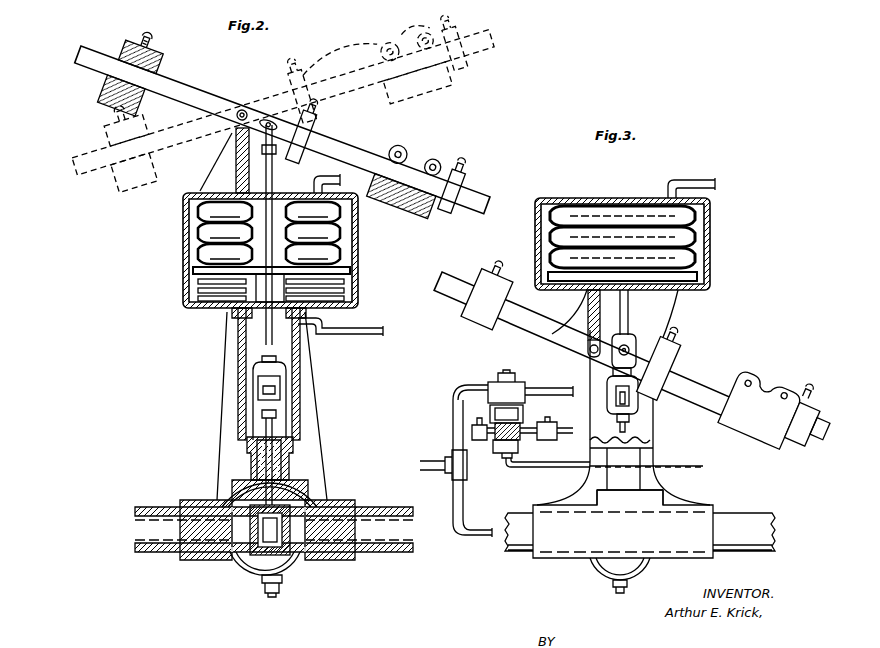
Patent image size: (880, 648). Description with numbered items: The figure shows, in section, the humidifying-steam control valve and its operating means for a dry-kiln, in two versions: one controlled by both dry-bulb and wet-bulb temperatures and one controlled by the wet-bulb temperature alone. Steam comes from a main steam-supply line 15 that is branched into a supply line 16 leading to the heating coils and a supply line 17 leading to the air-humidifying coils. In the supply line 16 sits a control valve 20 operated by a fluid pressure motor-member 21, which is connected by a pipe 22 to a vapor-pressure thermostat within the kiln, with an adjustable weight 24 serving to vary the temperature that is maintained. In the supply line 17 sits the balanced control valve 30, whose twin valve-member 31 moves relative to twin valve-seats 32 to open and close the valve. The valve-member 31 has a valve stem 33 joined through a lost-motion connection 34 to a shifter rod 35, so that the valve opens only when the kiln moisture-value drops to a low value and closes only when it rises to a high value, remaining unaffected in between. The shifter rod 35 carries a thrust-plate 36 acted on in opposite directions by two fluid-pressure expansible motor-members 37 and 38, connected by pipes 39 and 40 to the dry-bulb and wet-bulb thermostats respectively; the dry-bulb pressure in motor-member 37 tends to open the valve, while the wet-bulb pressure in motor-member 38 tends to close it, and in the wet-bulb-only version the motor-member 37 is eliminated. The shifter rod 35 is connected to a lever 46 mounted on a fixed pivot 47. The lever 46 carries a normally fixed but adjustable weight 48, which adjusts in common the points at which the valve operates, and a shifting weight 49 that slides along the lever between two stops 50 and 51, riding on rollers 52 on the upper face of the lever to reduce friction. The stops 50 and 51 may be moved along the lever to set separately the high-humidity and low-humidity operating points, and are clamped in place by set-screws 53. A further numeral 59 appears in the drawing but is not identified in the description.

In FIG. 3, the main steam-supply line 15 is at (442, 474).
In FIG. 3, the supply line 16 is at (548, 390).
In FIG. 2, the supply line 17 is at (163, 556).
In FIG. 3, the supply line 17 is at (480, 540).
In FIG. 3, the control valve 20 is at (500, 384).
In FIG. 3, the fluid pressure motor-member 21 is at (503, 455).
In FIG. 3, the pipe 22 is at (553, 470).
In FIG. 3, the adjustable weight 24 is at (552, 432).
In FIG. 2, the control valve 30 is at (257, 530).
In FIG. 3, the control valve 30 is at (623, 541).
In FIG. 2, the twin valve-member 31 is at (310, 491).
In FIG. 2, the twin valve-seats 32 is at (296, 556).
In FIG. 2, the valve stem 33 is at (250, 455).
In FIG. 3, the valve stem 33 is at (630, 406).
In FIG. 2, the lost-motion connection 34 is at (258, 395).
In FIG. 3, the lost-motion connection 34 is at (632, 418).
In FIG. 2, the shifter rod 35 is at (266, 340).
In FIG. 3, the shifter rod 35 is at (629, 320).
In FIG. 2, the thrust-plate 36 is at (352, 271).
In FIG. 3, the thrust-plate 36 is at (712, 276).
In FIG. 2, the fluid-pressure expansible motor-member 37 is at (355, 291).
In FIG. 2, the fluid-pressure expansible motor-member 38 is at (350, 247).
In FIG. 3, the fluid-pressure expansible motor-member 38 is at (712, 218).
In FIG. 2, the pipe 39 is at (372, 340).
In FIG. 2, the pipe 40 is at (322, 175).
In FIG. 3, the pipe 40 is at (709, 175).
In FIG. 2, the lever 46 is at (200, 85).
In FIG. 3, the lever 46 is at (700, 373).
In FIG. 2, the fixed pivot 47 is at (244, 109).
In FIG. 3, the fixed pivot 47 is at (589, 347).
In FIG. 2, the adjustable weight 48 is at (160, 55).
In FIG. 3, the adjustable weight 48 is at (474, 333).
In FIG. 2, the shifting weight 49 is at (424, 216).
In FIG. 3, the shifting weight 49 is at (755, 438).
In FIG. 2, the stop 50 is at (318, 124).
In FIG. 3, the stop 50 is at (665, 353).
In FIG. 2, the stop 51 is at (462, 192).
In FIG. 3, the stop 51 is at (790, 442).
In FIG. 2, the rollers 52 is at (426, 162).
In FIG. 2, the set-screws 53 is at (458, 163).
In FIG. 3, the set-screws 53 is at (499, 265).
In FIG. 2, the set screw 59 is at (144, 40).